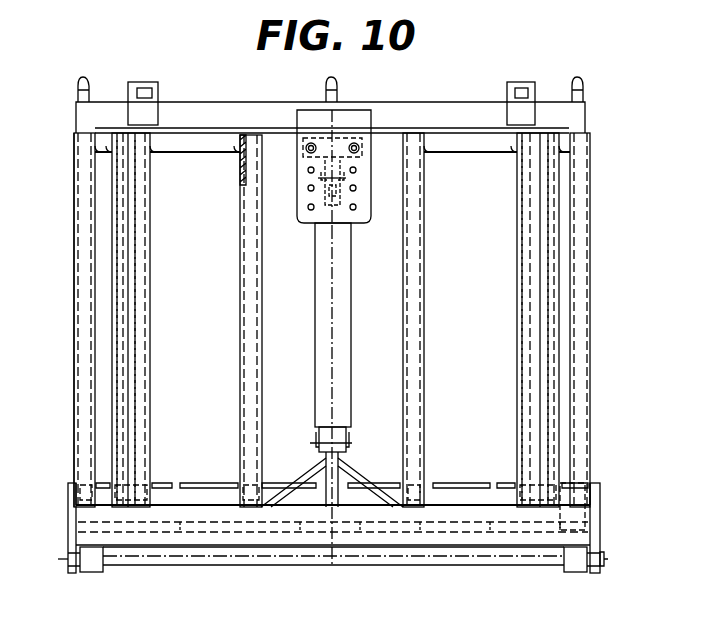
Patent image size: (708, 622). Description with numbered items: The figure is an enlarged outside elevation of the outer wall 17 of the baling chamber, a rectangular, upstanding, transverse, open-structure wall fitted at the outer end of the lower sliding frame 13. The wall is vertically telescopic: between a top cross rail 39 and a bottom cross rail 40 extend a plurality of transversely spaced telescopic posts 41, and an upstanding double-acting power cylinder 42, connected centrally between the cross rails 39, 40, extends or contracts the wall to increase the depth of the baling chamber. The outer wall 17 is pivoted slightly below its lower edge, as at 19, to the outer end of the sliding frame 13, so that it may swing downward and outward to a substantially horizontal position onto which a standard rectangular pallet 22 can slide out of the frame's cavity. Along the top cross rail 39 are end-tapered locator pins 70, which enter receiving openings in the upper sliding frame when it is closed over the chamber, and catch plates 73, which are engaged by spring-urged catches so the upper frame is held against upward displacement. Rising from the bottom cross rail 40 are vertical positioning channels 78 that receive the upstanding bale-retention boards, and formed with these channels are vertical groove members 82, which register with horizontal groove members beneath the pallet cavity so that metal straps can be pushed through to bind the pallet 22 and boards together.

The locator pin 70 is at (88, 80).
The catch plate 73 is at (142, 82).
The top cross rail 39 is at (192, 107).
The vertical groove member 82 is at (124, 236).
The vertical positioning channel 78 is at (151, 306).
The telescopic post 41 is at (77, 345).
The outer wall 17 is at (73, 399).
The double-acting power cylinder 42 is at (326, 297).
The pallet 22 is at (455, 483).
The sliding frame 13 is at (602, 491).
The pivot 19 is at (603, 558).
The bottom cross rail 40 is at (183, 537).